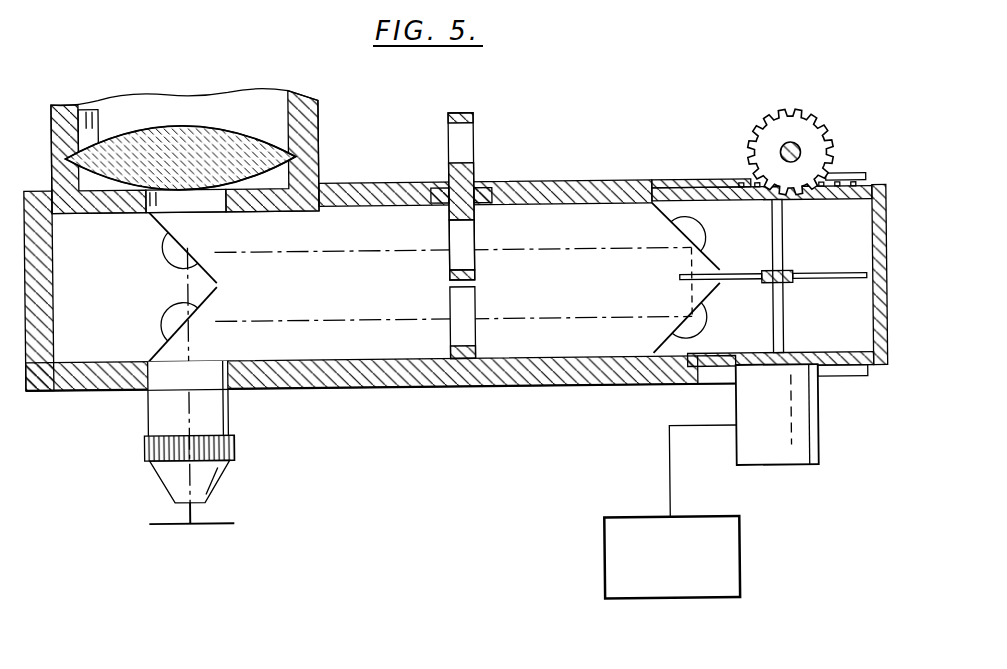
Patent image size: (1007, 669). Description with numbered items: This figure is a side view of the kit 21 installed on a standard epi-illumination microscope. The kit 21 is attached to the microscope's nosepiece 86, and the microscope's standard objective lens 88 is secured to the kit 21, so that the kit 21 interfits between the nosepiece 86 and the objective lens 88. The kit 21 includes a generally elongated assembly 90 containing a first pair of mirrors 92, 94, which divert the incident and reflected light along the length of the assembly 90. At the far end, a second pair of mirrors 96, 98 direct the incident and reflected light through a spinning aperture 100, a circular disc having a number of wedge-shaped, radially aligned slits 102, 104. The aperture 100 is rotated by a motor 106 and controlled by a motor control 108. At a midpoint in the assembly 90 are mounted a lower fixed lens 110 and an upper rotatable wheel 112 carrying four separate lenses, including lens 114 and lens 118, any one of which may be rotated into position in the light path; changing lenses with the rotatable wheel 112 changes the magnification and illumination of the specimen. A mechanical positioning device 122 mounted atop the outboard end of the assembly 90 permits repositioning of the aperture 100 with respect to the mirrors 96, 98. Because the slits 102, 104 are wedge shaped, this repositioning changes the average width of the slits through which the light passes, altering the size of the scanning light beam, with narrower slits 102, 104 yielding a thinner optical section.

The kit 21 is at (381, 515).
The nosepiece 86 is at (230, 110).
The objective lens 88 is at (142, 438).
The elongated assembly 90 is at (521, 380).
The mirror 92 is at (158, 217).
The mirror 94 is at (160, 341).
The mirror 96 is at (660, 212).
The mirror 98 is at (660, 340).
The spinning aperture 100 is at (808, 270).
The slit 102 is at (745, 275).
The slit 104 is at (815, 284).
The motor 106 is at (800, 448).
The motor control 108 is at (667, 601).
The lower fixed lens 110 is at (453, 333).
The rotatable wheel 112 is at (478, 109).
The lens 114 is at (466, 146).
The lens 118 is at (468, 236).
The mechanical positioning device 122 is at (812, 115).